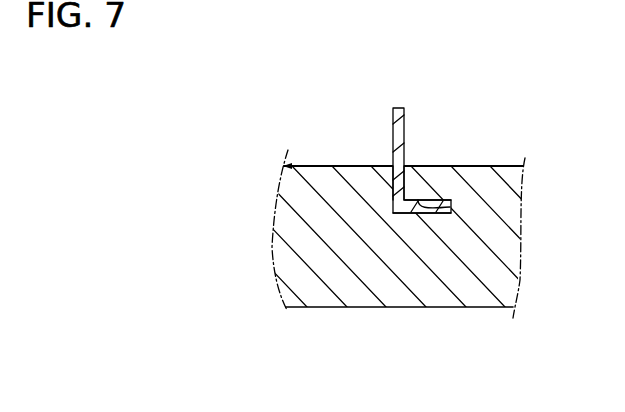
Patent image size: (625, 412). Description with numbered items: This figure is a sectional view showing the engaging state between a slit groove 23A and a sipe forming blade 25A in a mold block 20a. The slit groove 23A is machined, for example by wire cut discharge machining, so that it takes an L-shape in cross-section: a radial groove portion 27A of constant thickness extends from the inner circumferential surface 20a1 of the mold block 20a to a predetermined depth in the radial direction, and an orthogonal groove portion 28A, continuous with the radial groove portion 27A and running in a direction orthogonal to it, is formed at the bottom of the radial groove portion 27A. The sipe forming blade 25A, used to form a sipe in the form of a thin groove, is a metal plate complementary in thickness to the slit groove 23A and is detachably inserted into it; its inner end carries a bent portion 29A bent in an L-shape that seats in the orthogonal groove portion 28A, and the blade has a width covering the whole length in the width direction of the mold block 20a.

The mold block 20a is at (310, 239).
The inner circumferential surface 20a1 is at (307, 166).
The sipe forming blade 25A is at (385, 113).
The radial groove portion 27A is at (392, 177).
The slit groove 23A is at (420, 200).
The orthogonal groove portion 28A is at (414, 178).
The bent portion 29A is at (410, 213).